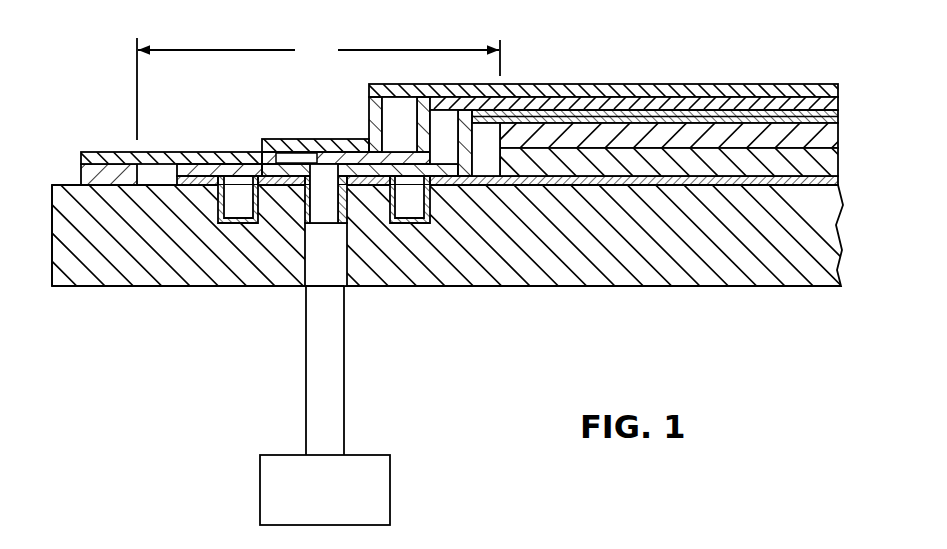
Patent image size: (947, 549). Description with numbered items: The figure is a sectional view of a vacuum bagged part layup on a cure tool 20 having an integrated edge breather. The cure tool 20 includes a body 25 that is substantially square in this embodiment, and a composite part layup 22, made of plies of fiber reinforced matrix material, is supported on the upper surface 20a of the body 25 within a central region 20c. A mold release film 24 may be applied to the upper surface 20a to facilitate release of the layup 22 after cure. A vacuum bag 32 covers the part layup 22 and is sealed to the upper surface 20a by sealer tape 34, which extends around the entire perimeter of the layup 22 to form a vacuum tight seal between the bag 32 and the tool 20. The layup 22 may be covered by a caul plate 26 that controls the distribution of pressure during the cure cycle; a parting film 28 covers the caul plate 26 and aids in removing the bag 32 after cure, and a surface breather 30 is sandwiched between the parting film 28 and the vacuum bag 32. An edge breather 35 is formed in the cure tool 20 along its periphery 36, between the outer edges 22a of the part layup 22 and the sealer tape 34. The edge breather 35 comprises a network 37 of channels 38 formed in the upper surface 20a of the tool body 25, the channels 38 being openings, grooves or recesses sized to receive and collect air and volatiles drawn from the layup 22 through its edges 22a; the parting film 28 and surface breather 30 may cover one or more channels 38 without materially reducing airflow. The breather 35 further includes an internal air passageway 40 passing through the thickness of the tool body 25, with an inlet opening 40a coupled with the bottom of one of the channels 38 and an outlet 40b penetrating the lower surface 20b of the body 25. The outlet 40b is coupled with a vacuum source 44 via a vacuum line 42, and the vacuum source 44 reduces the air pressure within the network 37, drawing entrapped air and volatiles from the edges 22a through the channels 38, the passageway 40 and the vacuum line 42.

The cure tool 20 is at (81, 270).
The upper surface 20a is at (70, 183).
The lower surface 20b is at (368, 293).
The central region 20c is at (663, 188).
The composite part layup 22 is at (813, 162).
The outer edges 22a is at (493, 172).
The mold release film 24 is at (808, 180).
The body 25 is at (64, 238).
The caul plate 26 is at (825, 137).
The parting film 28 is at (682, 115).
The surface breather 30 is at (630, 104).
The vacuum bag 32 is at (580, 92).
The sealer tape 34 is at (102, 183).
The edge breather 35 is at (377, 234).
The periphery 36 is at (318, 89).
The network of channels 37 is at (205, 211).
The channels 38 is at (233, 209).
The internal air passageway 40 is at (313, 213).
The inlet opening 40a is at (324, 215).
The outlet 40b is at (325, 291).
The vacuum line 42 is at (323, 413).
The vacuum source 44 is at (260, 490).